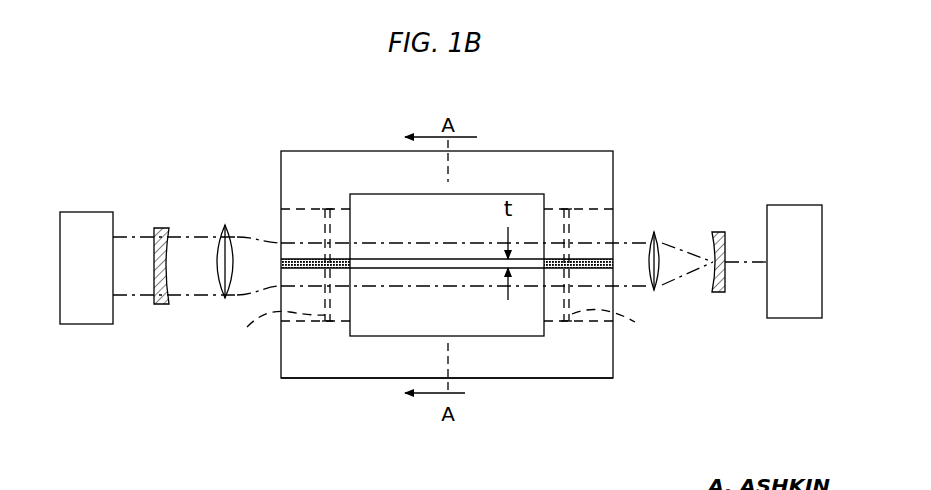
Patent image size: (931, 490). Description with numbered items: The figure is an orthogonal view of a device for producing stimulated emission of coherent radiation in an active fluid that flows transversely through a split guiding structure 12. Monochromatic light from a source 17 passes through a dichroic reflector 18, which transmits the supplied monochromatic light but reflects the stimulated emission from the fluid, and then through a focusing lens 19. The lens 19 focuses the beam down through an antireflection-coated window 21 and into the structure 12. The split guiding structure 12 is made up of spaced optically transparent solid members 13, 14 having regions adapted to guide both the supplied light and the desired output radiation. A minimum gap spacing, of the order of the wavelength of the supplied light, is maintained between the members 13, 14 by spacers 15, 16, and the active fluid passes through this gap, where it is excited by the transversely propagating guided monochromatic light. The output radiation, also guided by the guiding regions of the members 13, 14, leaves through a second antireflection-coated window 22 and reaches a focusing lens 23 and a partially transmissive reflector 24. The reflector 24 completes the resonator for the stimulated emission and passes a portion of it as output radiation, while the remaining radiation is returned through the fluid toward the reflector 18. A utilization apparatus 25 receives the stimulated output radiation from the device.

The split guiding structure 12 is at (555, 136).
The optically transparent solid member 13 is at (598, 160).
The optically transparent solid member 14 is at (598, 355).
The spacer 15 is at (287, 258).
The spacer 16 is at (612, 262).
The monochromatic light source 17 is at (95, 325).
The dichroic reflector 18 is at (163, 228).
The focusing lens 19 is at (225, 225).
The window 21 is at (259, 345).
The second antireflection coated window 22 is at (638, 341).
The focusing lens 23 is at (655, 290).
The partially transmissive reflector 24 is at (718, 233).
The utilization apparatus 25 is at (790, 320).